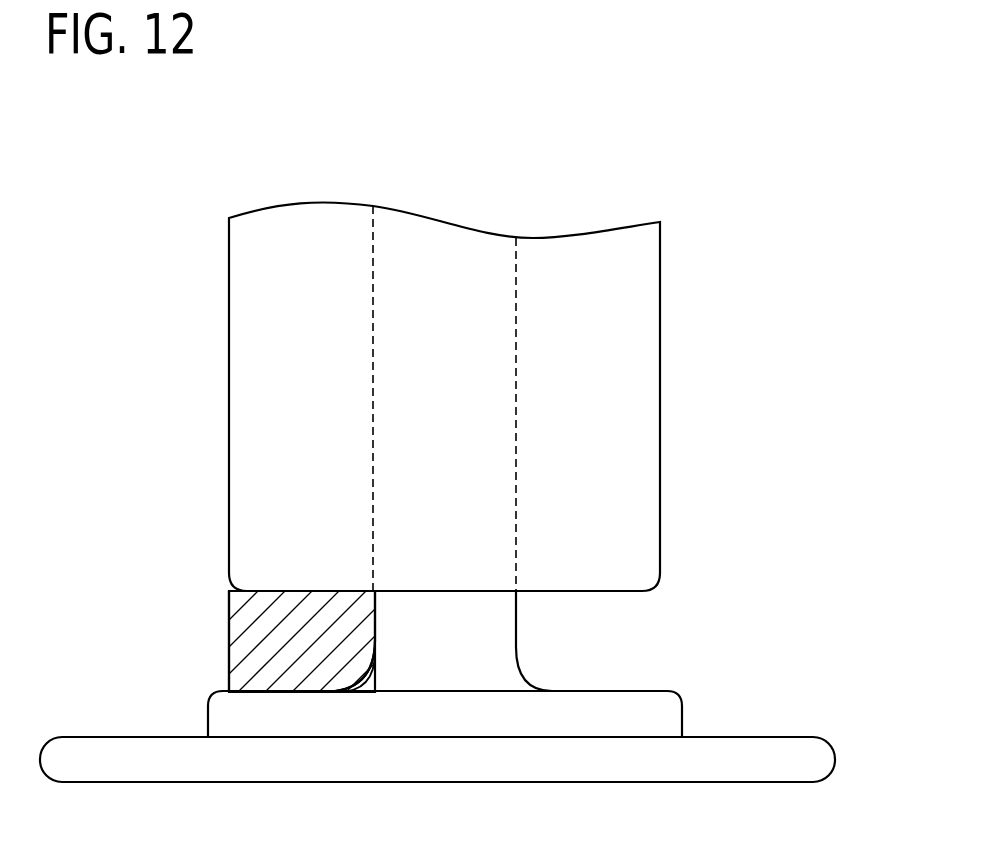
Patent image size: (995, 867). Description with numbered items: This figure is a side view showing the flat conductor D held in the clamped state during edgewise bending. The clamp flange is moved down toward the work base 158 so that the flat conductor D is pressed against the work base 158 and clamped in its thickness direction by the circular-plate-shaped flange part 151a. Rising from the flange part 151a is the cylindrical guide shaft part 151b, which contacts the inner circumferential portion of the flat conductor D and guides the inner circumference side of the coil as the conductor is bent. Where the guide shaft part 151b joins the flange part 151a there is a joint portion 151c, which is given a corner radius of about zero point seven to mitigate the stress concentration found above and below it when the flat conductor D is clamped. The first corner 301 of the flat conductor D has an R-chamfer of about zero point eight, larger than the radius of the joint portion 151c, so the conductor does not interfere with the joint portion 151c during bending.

The work base 158 is at (638, 402).
The guide shaft part 151b is at (495, 632).
The joint portion 151c is at (363, 685).
The flange part 151a is at (505, 763).
The first corner 301 is at (360, 675).
The flat conductor D is at (235, 658).